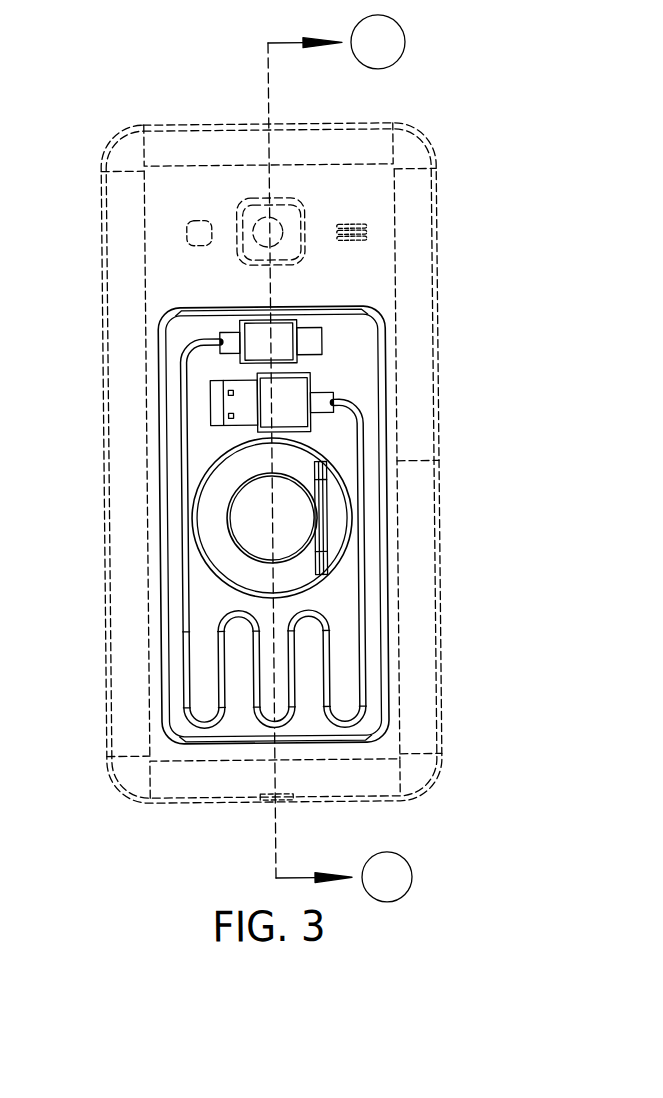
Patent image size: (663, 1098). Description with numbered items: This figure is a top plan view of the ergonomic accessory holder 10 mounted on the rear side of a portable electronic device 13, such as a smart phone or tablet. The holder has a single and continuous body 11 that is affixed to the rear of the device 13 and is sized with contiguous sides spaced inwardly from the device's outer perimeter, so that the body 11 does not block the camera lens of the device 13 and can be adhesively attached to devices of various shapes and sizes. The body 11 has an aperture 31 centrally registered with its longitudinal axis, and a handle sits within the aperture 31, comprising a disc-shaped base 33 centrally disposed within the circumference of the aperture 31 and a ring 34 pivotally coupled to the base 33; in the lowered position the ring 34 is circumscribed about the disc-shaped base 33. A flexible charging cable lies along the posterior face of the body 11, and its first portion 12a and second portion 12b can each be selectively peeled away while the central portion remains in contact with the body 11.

The ergonomic accessory holder 10 is at (182, 293).
The body 11 is at (388, 338).
The first portion 12a is at (291, 402).
The second portion 12b is at (283, 340).
The portable electronic device 13 is at (412, 152).
The aperture 31 is at (302, 573).
The disc-shaped base 33 is at (262, 522).
The ring 34 is at (324, 480).